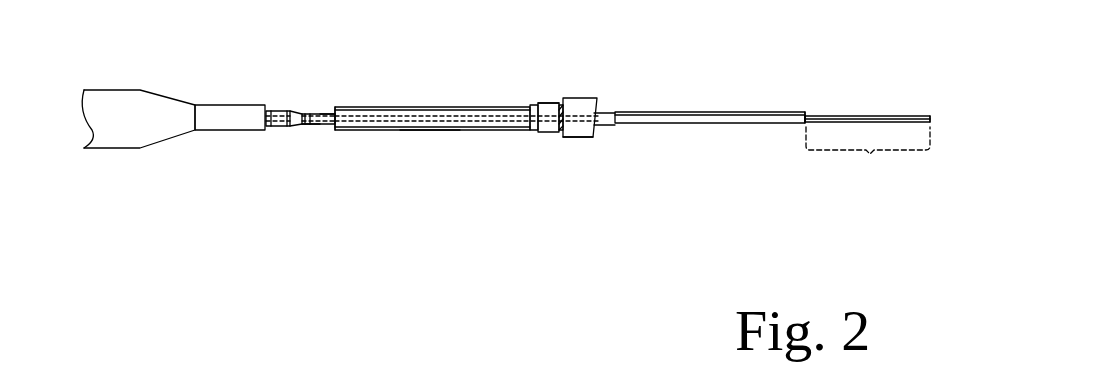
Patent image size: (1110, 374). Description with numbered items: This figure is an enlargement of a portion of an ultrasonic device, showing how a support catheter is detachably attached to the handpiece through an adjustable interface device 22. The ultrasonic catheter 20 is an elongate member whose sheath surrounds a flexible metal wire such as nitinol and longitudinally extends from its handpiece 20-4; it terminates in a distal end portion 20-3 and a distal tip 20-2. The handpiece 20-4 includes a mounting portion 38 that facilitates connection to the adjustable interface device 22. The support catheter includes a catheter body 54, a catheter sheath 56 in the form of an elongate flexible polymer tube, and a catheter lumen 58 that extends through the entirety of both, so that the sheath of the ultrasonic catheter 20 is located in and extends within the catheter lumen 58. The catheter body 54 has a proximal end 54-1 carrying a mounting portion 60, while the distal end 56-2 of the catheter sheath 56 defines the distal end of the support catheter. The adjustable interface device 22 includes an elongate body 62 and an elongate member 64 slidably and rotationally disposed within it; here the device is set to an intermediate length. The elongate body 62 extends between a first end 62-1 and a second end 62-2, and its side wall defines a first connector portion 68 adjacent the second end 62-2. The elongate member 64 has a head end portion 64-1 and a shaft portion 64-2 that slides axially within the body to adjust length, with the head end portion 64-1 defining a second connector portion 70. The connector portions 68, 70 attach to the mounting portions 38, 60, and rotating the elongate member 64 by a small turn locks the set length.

The ultrasonic catheter 20 is at (606, 110).
The distal tip 20-2 is at (931, 117).
The distal end portion 20-3 is at (872, 153).
The handpiece 20-4 is at (120, 88).
The adjustable interface device 22 is at (413, 187).
The mounting portion 38 is at (268, 110).
The catheter body 54 is at (582, 97).
The proximal end 54-1 is at (558, 138).
The catheter sheath 56 is at (717, 125).
The distal end 56-2 is at (806, 111).
The catheter lumen 58 is at (820, 132).
The mounting portion 60 is at (558, 104).
The elongate body 62 is at (461, 94).
The first end 62-1 is at (332, 131).
The second end 62-2 is at (548, 133).
The elongate member 64 is at (314, 93).
The head end portion 64-1 is at (278, 128).
The shaft portion 64-2 is at (321, 110).
The first connector portion 68 is at (542, 89).
The second connector portion 70 is at (285, 98).